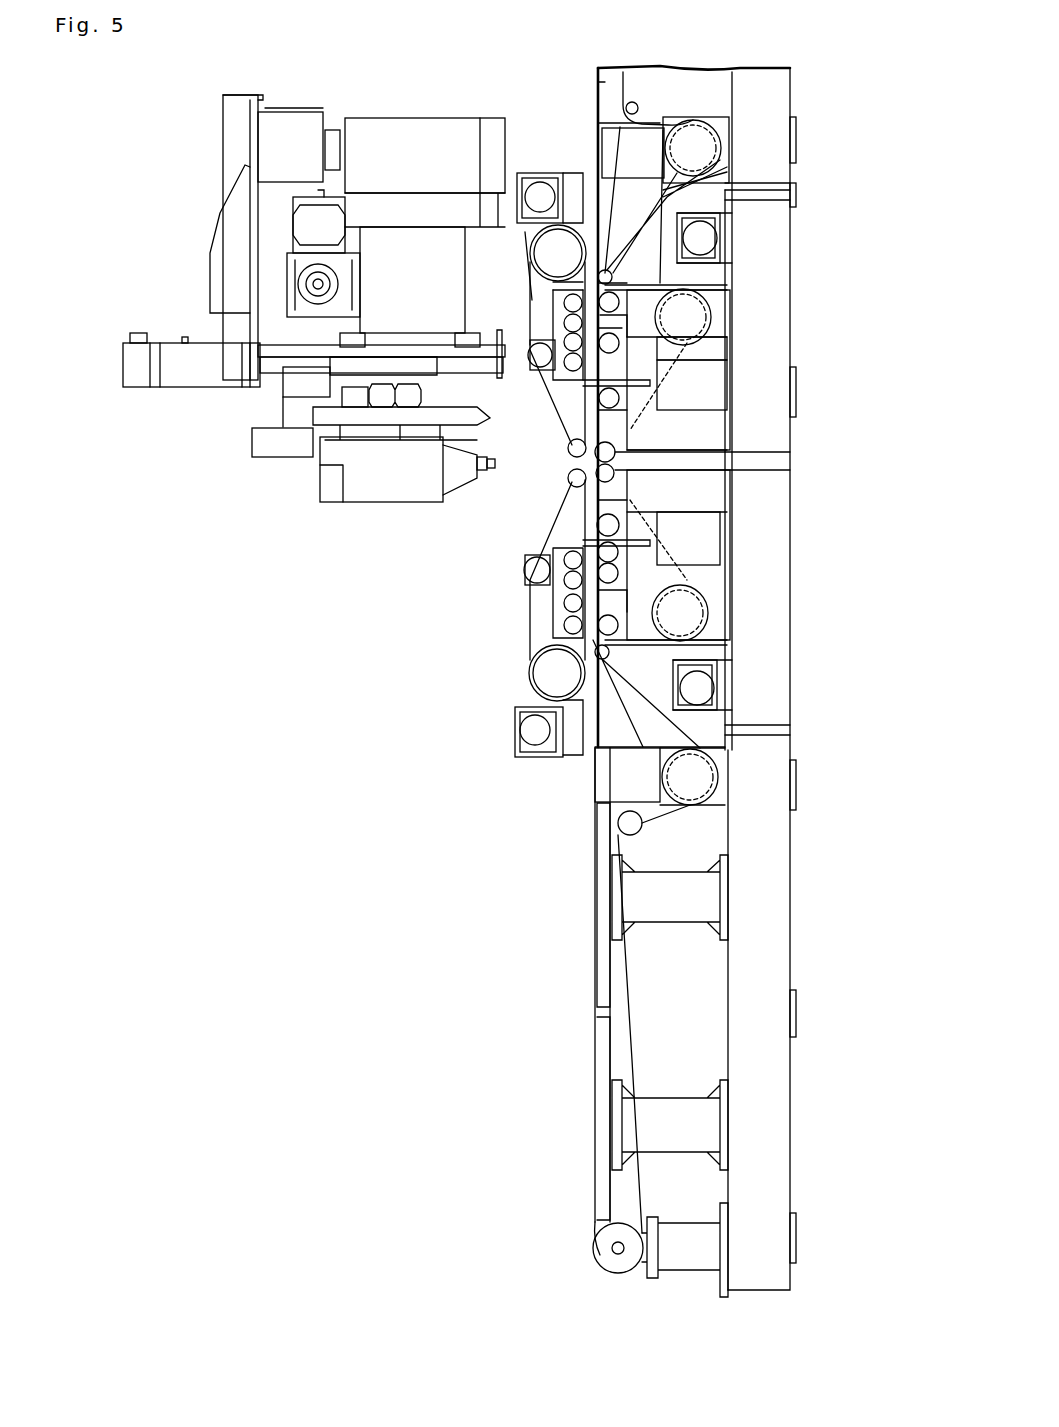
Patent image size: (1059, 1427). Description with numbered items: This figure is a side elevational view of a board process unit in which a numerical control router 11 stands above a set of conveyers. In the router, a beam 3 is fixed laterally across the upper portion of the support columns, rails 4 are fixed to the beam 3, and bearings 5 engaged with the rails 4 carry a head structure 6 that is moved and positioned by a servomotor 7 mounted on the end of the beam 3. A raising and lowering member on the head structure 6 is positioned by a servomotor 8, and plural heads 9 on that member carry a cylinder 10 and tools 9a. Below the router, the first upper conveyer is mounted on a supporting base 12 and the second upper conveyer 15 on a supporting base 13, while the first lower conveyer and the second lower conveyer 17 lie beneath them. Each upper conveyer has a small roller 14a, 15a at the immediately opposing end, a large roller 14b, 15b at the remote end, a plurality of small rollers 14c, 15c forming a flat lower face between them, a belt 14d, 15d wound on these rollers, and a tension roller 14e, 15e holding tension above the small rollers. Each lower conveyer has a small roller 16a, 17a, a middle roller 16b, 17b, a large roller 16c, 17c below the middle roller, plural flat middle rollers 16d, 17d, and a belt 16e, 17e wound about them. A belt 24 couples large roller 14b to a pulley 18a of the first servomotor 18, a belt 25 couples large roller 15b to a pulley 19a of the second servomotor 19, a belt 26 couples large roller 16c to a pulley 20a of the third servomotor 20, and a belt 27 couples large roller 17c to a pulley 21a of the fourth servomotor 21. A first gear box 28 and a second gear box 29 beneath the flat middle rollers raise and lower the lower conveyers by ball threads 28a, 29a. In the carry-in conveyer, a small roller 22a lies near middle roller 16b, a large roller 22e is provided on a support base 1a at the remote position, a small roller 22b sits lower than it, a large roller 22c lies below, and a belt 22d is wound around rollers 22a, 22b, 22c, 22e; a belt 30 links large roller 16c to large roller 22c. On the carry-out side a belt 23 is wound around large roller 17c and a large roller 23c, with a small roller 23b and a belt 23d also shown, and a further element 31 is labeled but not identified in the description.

The support base 1a is at (688, 1257).
The beam 3 is at (378, 238).
The rails 4 is at (355, 337).
The bearings 5 is at (340, 337).
The head structure 6 is at (403, 343).
The servomotor 7 is at (300, 225).
The servomotor 8 is at (128, 370).
The heads 9 is at (365, 490).
The tools 9a is at (495, 463).
The cylinder 10 is at (260, 448).
The numerical control router 11 is at (326, 522).
The supporting base 12 is at (607, 780).
The supporting base 13 is at (648, 122).
The small roller 14a is at (568, 480).
The large roller 14b is at (545, 673).
The small rollers 14c is at (548, 610).
The belt 14d is at (543, 533).
The tension roller 14e is at (524, 570).
The second upper conveyer 15 is at (551, 240).
The small roller 15a is at (567, 447).
The large roller 15b is at (537, 253).
The small rollers 15c is at (547, 310).
The belt 15d is at (532, 287).
The tension roller 15e is at (532, 368).
The small roller 16a is at (612, 473).
The middle roller 16b is at (612, 625).
The large roller 16c is at (680, 613).
The middle flat rollers 16d is at (612, 525).
The belt 16e is at (615, 575).
The second lower conveyer 17 is at (650, 343).
The small roller 17a is at (612, 452).
The middle roller 17b is at (612, 300).
The large roller 17c is at (683, 317).
The middle flat rollers 17d is at (620, 405).
The belt 17e is at (690, 378).
The first servomotor 18 is at (520, 740).
The pulley 18a is at (530, 742).
The second servomotor 19 is at (527, 183).
The pulley 19a is at (538, 192).
The third servomotor 20 is at (715, 700).
The pulley 20a is at (697, 688).
The fourth servomotor 21 is at (720, 222).
The pulley 21a is at (700, 238).
The small roller 22a is at (585, 645).
The small roller 22b is at (633, 828).
The large roller 22c is at (690, 777).
The belt 22d is at (593, 840).
The large roller 22e is at (613, 1262).
The belt 23 is at (668, 120).
The small roller 23b is at (635, 100).
The large roller 23c is at (700, 148).
The belt 23d is at (598, 82).
The belt 24 is at (530, 690).
The belt 25 is at (527, 237).
The belt 26 is at (620, 640).
The belt 27 is at (650, 288).
The first gear box 28 is at (710, 540).
The ball thread 28a is at (660, 545).
The second gear box 29 is at (710, 378).
The ball thread 29a is at (615, 398).
The belt 30 is at (690, 745).
The upper frame plate 31 is at (662, 195).